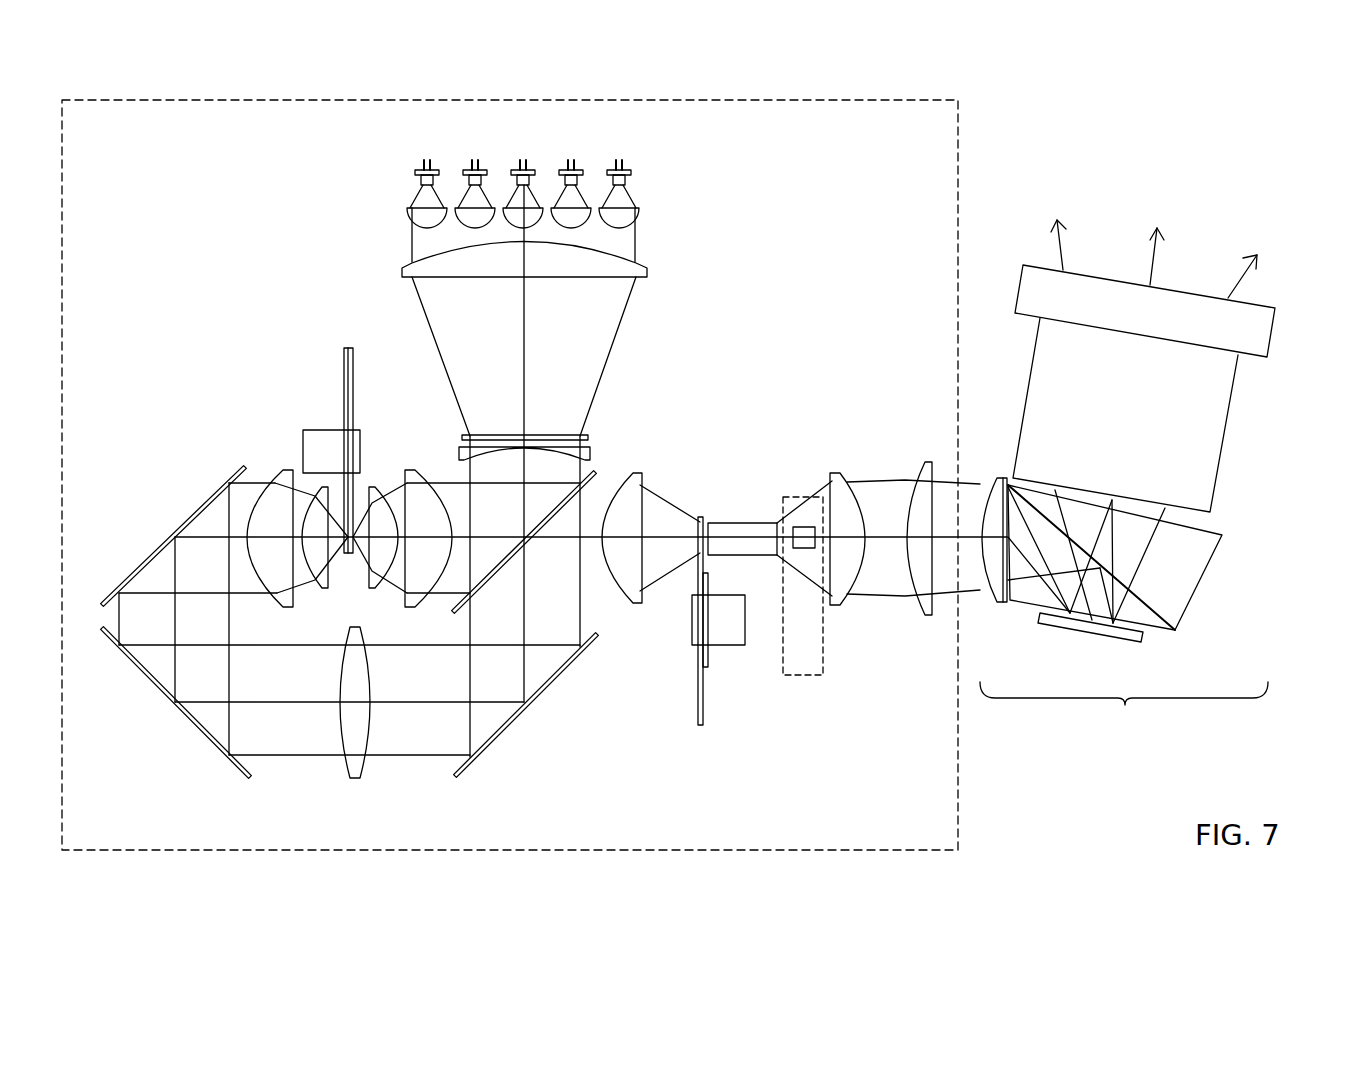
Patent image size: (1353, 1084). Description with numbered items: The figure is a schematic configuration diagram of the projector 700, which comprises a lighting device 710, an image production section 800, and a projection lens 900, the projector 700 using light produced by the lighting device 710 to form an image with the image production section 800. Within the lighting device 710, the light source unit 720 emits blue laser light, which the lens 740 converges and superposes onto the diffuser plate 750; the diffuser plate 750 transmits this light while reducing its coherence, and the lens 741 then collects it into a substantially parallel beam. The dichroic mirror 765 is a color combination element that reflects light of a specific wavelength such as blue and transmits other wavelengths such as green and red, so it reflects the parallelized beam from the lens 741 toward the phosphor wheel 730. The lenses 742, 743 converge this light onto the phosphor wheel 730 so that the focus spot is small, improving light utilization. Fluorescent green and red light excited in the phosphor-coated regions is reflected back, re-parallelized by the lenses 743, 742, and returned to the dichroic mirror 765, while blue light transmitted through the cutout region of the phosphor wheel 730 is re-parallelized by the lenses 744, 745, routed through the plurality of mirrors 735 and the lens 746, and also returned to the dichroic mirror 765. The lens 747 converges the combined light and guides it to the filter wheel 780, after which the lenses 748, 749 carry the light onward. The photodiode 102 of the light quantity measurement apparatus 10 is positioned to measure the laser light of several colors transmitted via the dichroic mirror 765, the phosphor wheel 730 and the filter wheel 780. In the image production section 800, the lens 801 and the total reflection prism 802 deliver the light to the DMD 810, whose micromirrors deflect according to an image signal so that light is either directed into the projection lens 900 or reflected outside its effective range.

The projector 700 is at (1040, 86).
The lighting device 710 is at (697, 98).
The light source unit 720 is at (635, 170).
The phosphor wheel 730 is at (343, 350).
The mirrors 735 is at (137, 568).
The lens 740 is at (648, 272).
The lens 741 is at (590, 450).
The lens 742 is at (417, 472).
The lens 743 is at (373, 488).
The lens 744 is at (320, 492).
The lens 745 is at (275, 478).
The lens 746 is at (357, 777).
The lens 747 is at (637, 600).
The lens 748 is at (832, 480).
The lens 749 is at (918, 480).
The diffuser plate 750 is at (587, 440).
The dichroic mirror 765 is at (596, 474).
The filter wheel 780 is at (705, 717).
The photodiode 102 is at (800, 530).
The light quantity measurement apparatus 10 is at (805, 677).
The image production section 800 is at (1137, 620).
The lens 801 is at (1000, 600).
The total reflection prism 802 is at (1188, 585).
The DMD 810 is at (1075, 625).
The projection lens 900 is at (1052, 387).